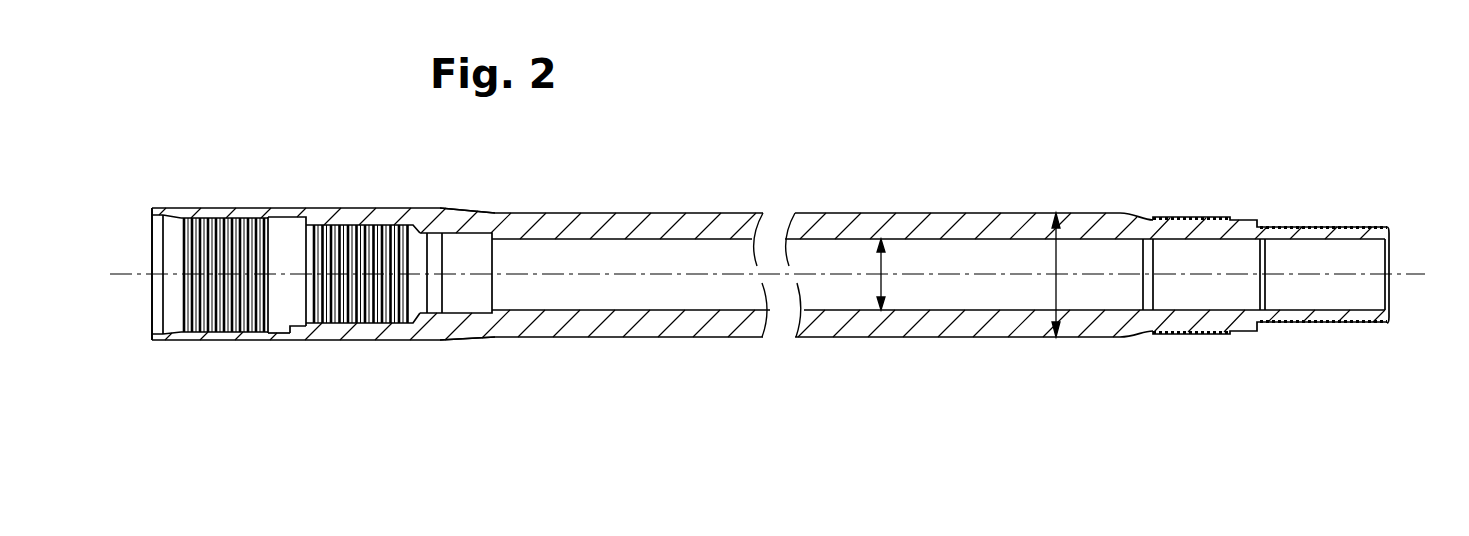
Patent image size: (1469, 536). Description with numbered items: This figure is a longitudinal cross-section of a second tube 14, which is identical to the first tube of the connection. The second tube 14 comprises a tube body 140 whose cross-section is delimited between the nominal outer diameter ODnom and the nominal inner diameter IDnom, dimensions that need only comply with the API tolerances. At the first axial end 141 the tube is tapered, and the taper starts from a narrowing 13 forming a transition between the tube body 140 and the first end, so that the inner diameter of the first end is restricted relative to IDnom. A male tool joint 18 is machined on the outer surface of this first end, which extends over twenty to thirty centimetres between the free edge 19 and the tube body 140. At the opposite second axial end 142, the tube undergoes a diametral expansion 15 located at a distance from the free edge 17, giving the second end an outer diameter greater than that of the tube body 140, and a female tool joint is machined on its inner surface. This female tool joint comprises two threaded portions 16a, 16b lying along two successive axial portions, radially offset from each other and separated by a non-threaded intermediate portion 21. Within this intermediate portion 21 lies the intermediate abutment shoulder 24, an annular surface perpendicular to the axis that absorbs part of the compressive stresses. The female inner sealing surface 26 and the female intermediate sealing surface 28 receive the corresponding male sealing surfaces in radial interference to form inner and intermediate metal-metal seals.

The narrowing 13 is at (1150, 262).
The second tube 14 is at (768, 249).
The diametral expansion 15 is at (468, 198).
The threaded portion 16a is at (367, 233).
The threaded portion 16b is at (217, 226).
The free edge 17 is at (150, 208).
The male tool joint 18 is at (1345, 228).
The free edge 19 is at (1392, 232).
The non-threaded intermediate portion 21 is at (297, 200).
The intermediate abutment shoulder 24 is at (290, 336).
The female inner sealing surface 26 is at (422, 328).
The female intermediate sealing surface 28 is at (281, 334).
The tube body 140 is at (962, 225).
The first axial end 141 is at (1300, 205).
The second axial end 142 is at (207, 189).
The nominal inner diameter IDnom is at (880, 264).
The nominal outer diameter ODnom is at (1055, 263).